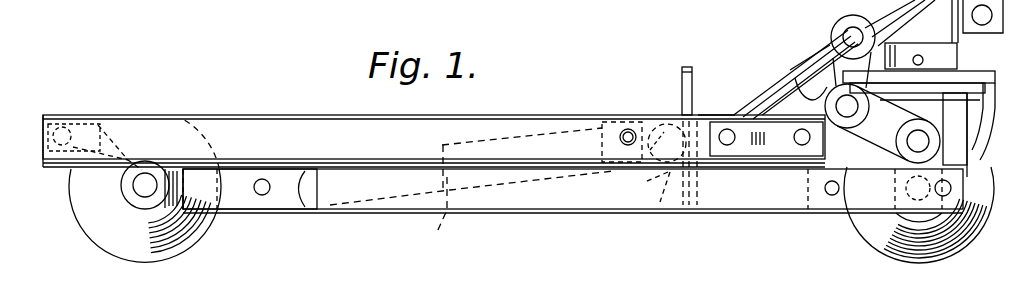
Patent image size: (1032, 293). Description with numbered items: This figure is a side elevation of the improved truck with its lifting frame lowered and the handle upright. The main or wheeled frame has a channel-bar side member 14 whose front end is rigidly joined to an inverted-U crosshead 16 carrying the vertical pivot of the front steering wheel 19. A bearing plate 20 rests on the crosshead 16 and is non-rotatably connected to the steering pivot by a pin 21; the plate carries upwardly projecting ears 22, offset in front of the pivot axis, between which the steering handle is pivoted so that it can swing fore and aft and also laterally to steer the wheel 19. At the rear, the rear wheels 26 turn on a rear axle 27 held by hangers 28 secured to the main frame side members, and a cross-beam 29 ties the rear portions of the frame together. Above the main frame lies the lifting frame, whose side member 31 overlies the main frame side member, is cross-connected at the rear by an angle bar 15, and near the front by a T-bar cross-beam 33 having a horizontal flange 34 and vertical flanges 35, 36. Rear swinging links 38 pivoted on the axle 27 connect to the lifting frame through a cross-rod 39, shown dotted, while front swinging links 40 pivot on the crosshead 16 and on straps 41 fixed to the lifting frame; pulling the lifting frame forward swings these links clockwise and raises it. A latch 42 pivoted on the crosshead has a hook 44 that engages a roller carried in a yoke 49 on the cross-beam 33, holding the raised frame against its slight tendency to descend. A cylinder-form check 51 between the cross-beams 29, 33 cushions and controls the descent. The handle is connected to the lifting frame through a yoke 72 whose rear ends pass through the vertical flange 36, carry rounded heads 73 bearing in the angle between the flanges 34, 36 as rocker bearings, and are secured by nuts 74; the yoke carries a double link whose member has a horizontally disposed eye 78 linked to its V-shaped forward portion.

The side member of the main frame 14 is at (505, 213).
The angle bar 15 is at (40, 158).
The crosshead 16 is at (972, 124).
The front steering wheel 19 is at (852, 226).
The bearing plate 20 is at (972, 118).
The pin 21 is at (923, 60).
The ears 22 is at (932, 88).
The rear wheels 26 is at (76, 206).
The rear axle 27 is at (140, 189).
The hangers 28 is at (245, 198).
The cross-beam 29 is at (266, 198).
The side member of the lifting frame 31 is at (232, 114).
The cross-beam 33 is at (682, 108).
The horizontal flange 34 is at (592, 115).
The vertical flange 35 is at (682, 70).
The vertical flange 36 is at (686, 206).
The swinging links 38 is at (110, 142).
The cross-rod 39 is at (68, 117).
The swinging links 40 is at (873, 152).
The straps 41 is at (827, 143).
The latch 42 is at (840, 52).
The hook 44 is at (800, 96).
The yoke 49 is at (703, 104).
The check 51 is at (471, 190).
The yoke 72 is at (768, 86).
The rounded heads 73 is at (658, 212).
The nuts 74 is at (659, 165).
The horizontally disposed eye 78 is at (840, 37).